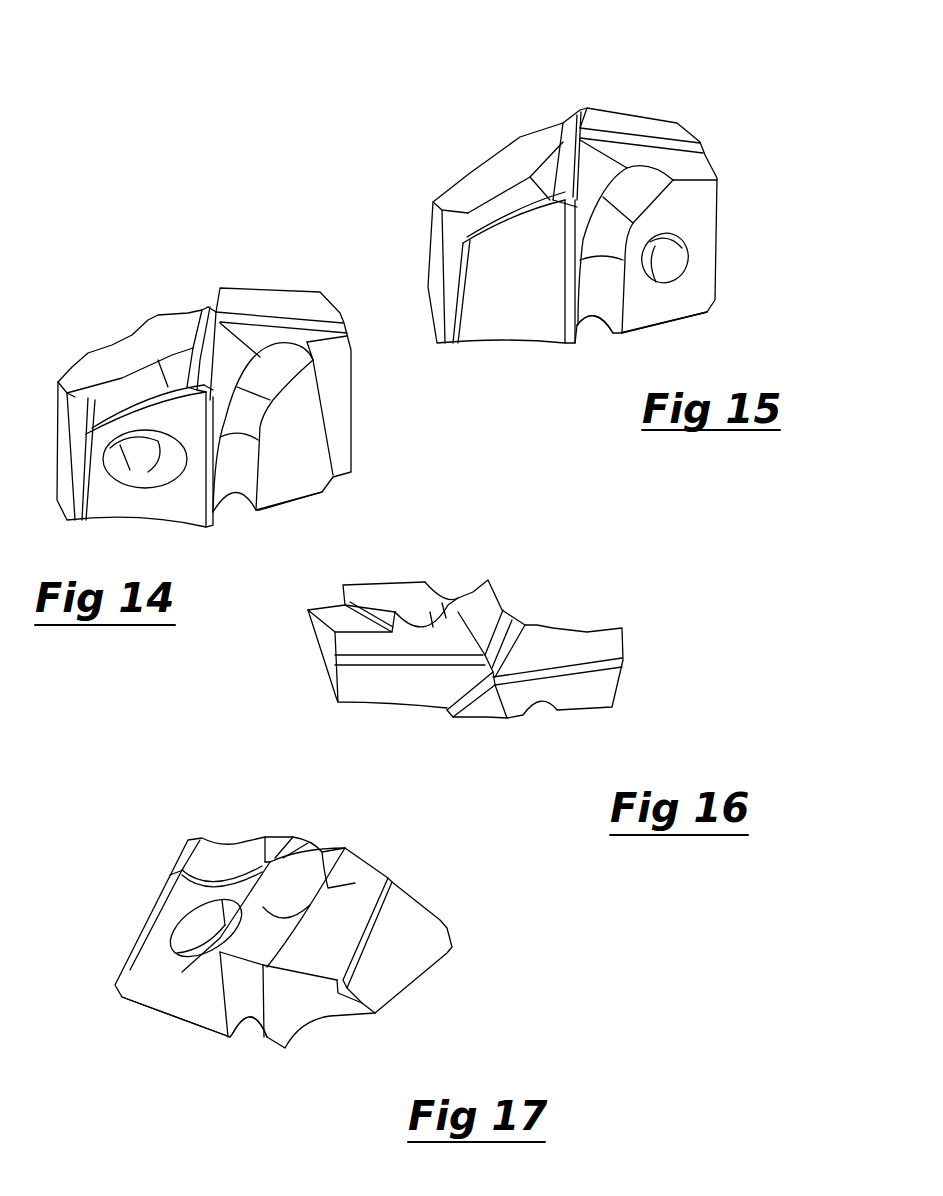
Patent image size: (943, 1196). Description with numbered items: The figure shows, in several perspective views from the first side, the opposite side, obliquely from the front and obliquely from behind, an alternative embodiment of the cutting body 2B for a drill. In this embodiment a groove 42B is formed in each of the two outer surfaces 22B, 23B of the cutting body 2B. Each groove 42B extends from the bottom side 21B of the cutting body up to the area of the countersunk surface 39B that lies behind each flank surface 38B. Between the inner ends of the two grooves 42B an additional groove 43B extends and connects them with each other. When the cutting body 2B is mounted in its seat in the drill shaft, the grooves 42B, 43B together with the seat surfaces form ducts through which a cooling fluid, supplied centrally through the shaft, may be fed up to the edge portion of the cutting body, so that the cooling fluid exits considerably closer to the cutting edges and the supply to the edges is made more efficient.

In FIG. 14, the cutting body 2B is at (126, 311).
In FIG. 15, the cutting body 2B is at (519, 107).
In FIG. 16, the cutting body 2B is at (570, 600).
In FIG. 17, the cutting body 2B is at (264, 812).
In FIG. 17, the bottom side 21B is at (185, 1013).
In FIG. 15, the outer surface 22B is at (670, 307).
In FIG. 14, the outer surface 23B is at (277, 497).
In FIG. 14, the flank surface 38B is at (273, 300).
In FIG. 15, the flank surface 38B is at (643, 127).
In FIG. 14, the countersunk surface 39B is at (335, 338).
In FIG. 15, the countersunk surface 39B is at (697, 173).
In FIG. 14, the groove 42B is at (245, 462).
In FIG. 15, the groove 42B is at (590, 295).
In FIG. 16, the groove 42B is at (457, 590).
In FIG. 17, the groove 42B is at (263, 910).
In FIG. 15, the additional groove 43B is at (587, 330).
In FIG. 17, the additional groove 43B is at (257, 987).